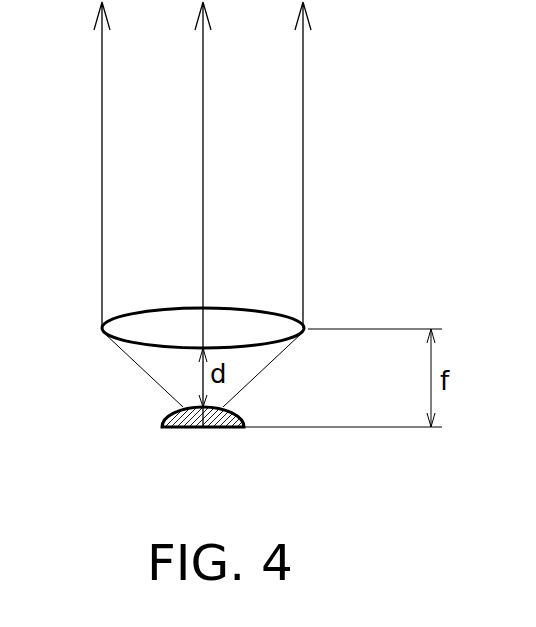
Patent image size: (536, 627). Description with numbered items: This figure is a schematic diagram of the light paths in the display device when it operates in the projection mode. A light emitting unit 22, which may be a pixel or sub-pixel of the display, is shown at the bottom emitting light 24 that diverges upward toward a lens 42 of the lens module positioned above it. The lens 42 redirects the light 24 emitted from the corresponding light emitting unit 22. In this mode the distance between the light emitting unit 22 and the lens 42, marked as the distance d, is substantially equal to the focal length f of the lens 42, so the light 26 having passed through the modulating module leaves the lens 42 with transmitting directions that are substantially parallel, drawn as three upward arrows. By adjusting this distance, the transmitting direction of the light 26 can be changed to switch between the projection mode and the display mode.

The light emitting unit 22 is at (176, 428).
The light 24 is at (140, 368).
The light having passed through the modulating module 26 is at (102, 100).
The lens 42 is at (255, 322).